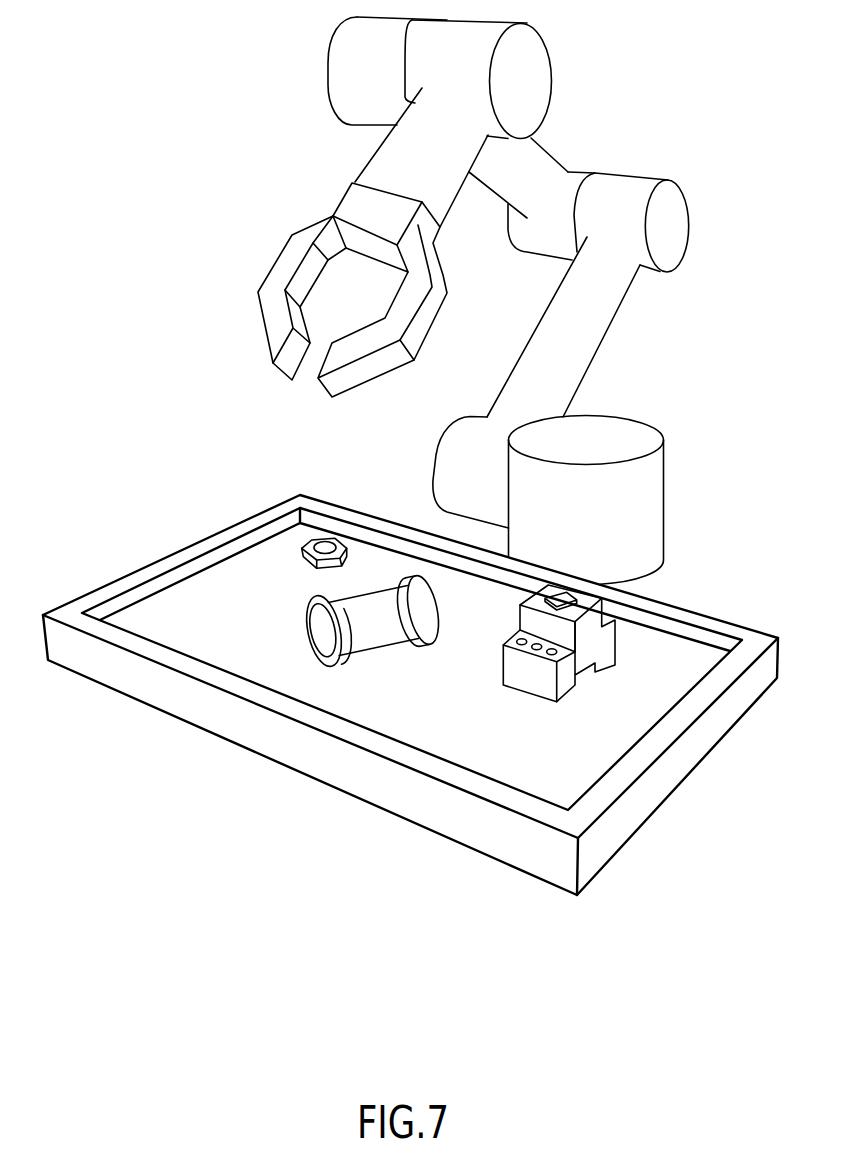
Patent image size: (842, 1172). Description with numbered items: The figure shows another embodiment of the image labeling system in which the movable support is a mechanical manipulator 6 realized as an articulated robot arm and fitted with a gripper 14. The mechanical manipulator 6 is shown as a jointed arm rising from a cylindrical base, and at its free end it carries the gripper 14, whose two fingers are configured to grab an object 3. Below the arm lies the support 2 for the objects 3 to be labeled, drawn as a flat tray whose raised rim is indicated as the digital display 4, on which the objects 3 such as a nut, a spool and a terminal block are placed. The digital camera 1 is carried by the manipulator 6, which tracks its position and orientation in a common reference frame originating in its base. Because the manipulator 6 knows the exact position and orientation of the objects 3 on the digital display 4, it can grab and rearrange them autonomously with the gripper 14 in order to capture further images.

The digital camera 1 is at (363, 218).
The support 2 is at (168, 623).
The object 3 is at (308, 543).
The digital display 4 is at (680, 751).
The mechanical manipulator 6 is at (681, 142).
The gripper 14 is at (275, 315).